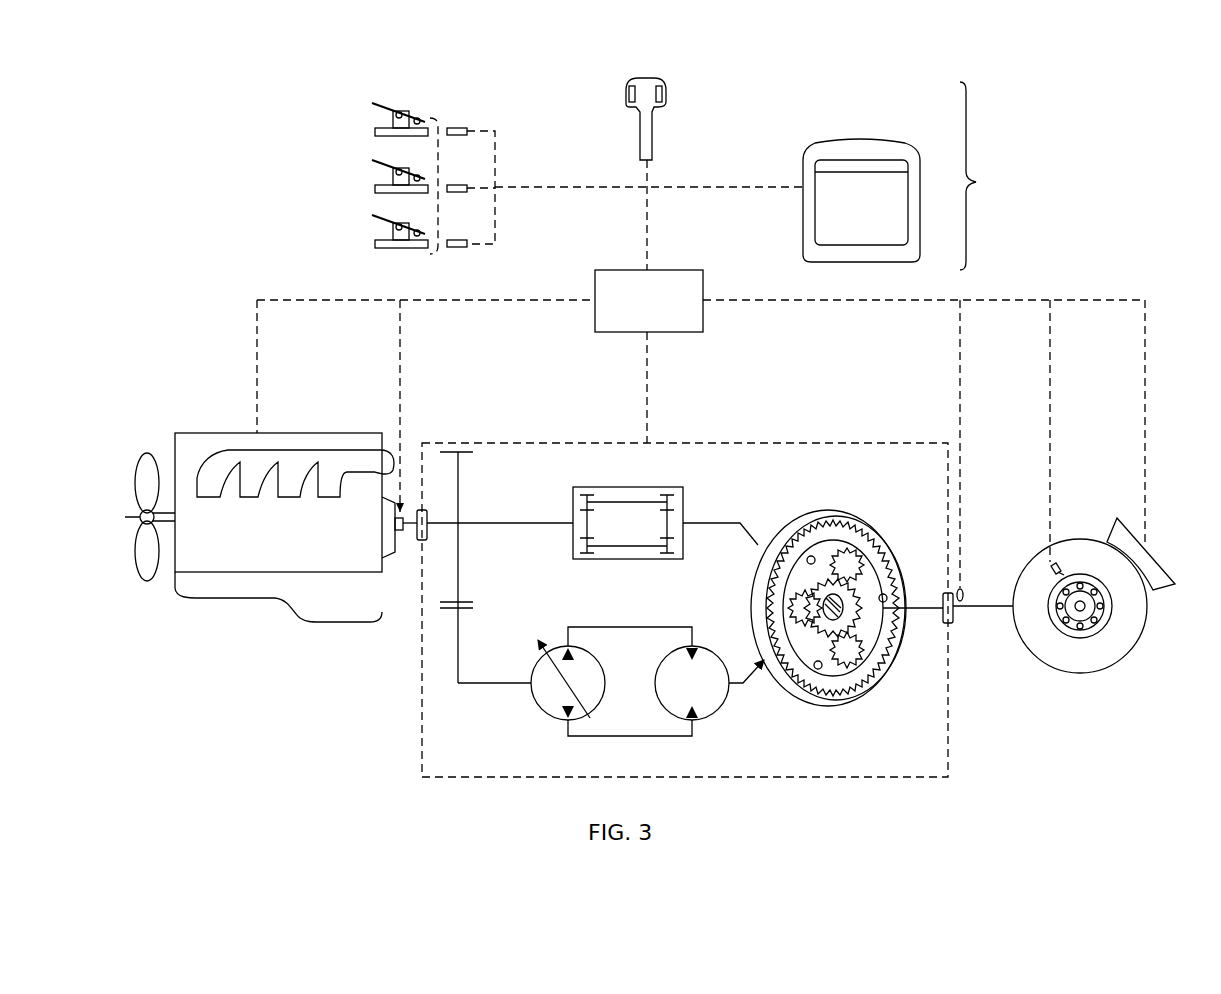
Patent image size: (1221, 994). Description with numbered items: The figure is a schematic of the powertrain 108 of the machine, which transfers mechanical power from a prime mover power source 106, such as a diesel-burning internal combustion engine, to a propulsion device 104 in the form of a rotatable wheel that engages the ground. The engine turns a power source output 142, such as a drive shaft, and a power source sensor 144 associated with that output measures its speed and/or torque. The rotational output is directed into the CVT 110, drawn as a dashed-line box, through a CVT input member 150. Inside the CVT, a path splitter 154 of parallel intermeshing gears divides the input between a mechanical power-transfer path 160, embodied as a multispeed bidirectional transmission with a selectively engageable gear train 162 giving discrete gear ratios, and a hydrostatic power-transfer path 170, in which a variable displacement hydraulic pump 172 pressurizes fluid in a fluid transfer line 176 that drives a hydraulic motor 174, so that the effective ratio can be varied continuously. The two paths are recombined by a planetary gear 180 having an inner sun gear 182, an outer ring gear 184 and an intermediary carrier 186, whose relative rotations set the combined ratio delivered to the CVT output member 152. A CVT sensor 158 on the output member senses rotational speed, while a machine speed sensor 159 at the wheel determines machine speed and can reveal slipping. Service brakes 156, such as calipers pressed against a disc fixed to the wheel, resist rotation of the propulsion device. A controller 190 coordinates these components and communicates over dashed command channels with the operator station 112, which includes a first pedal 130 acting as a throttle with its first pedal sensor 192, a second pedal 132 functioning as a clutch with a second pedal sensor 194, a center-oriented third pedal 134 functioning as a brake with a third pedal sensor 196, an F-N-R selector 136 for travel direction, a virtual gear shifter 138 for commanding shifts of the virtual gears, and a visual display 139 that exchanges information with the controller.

The propulsion device 104 is at (1082, 662).
The prime mover power source 106 is at (225, 433).
The powertrain 108 is at (685, 551).
The CVT 110 is at (580, 442).
The operator station 112 is at (995, 176).
The first pedal 130 is at (372, 128).
The second pedal 132 is at (374, 185).
The third pedal 134 is at (376, 233).
The F-N-R selector 136 is at (628, 93).
The virtual gear shifter 138 is at (660, 93).
The visual display 139 is at (860, 145).
The power source output 142 is at (410, 530).
The power source sensor 144 is at (405, 507).
The CVT input member 150 is at (428, 540).
The CVT output member 152 is at (953, 625).
The path splitter 154 is at (458, 487).
The service brakes 156 is at (1153, 560).
The CVT sensor 158 is at (965, 595).
The machine speed sensor 159 is at (1060, 568).
The mechanical power-transfer path 160 is at (672, 503).
The gear train 162 is at (625, 502).
The hydrostatic power-transfer path 170 is at (615, 697).
The hydraulic pump 172 is at (585, 647).
The hydraulic motor 174 is at (657, 702).
The fluid transfer line 176 is at (623, 627).
The planetary gear 180 is at (844, 605).
The sun gear 182 is at (832, 580).
The ring gear 184 is at (858, 697).
The carrier 186 is at (895, 578).
The controller 190 is at (632, 312).
The first pedal sensor 192 is at (457, 127).
The second pedal sensor 194 is at (462, 183).
The third pedal sensor 196 is at (462, 238).